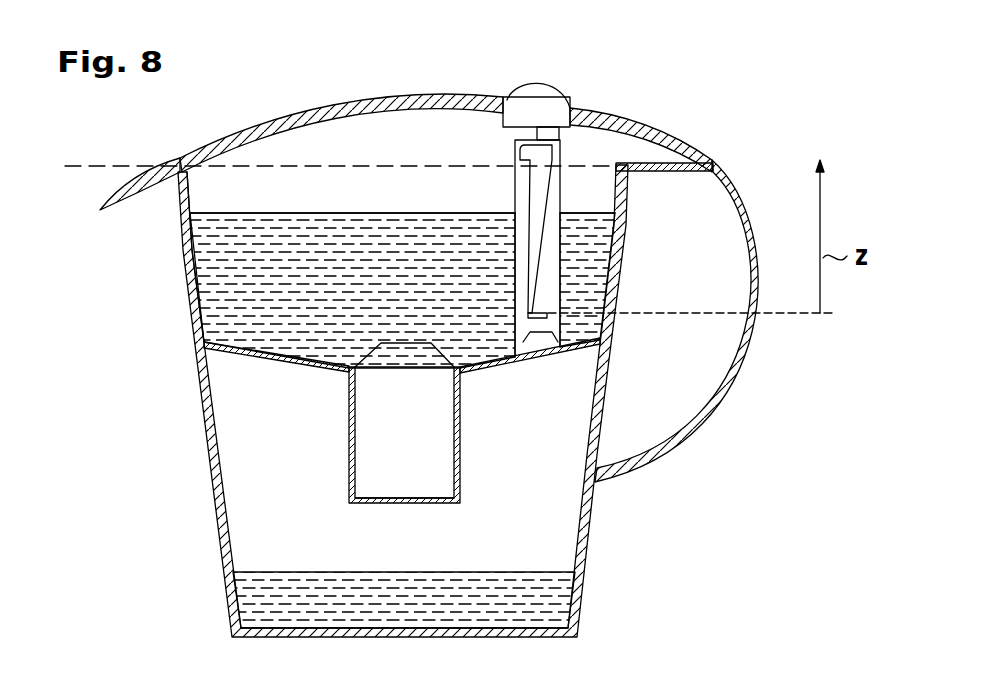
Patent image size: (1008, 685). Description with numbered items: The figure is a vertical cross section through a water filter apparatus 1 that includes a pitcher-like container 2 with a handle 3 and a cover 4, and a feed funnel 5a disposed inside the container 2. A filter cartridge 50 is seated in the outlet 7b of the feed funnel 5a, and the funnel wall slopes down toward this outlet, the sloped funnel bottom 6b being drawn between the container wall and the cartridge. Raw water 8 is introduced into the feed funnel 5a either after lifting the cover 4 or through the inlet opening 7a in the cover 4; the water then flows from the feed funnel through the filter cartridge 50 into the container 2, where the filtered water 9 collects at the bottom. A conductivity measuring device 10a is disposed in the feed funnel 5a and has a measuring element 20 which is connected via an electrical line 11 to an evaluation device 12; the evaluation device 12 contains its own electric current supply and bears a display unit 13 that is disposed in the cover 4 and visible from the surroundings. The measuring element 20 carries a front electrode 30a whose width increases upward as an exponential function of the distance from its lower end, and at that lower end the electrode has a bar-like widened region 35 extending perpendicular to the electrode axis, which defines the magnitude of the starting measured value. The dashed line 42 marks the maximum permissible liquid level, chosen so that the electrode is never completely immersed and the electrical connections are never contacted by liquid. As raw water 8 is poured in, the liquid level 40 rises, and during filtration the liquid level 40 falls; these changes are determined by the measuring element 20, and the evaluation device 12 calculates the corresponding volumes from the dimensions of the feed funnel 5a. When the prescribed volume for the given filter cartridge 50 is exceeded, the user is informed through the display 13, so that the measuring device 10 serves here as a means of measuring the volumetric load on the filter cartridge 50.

The water filter apparatus 1 is at (743, 120).
The pitcher-like container 2 is at (222, 532).
The handle 3 is at (703, 420).
The cover 4 is at (437, 100).
The feed funnel 5a is at (200, 272).
The funnel bottom 6b is at (274, 358).
The inlet opening 7a is at (264, 126).
The outlet of the feed funnel 7b is at (407, 503).
The raw water 8 is at (247, 308).
The filtered water 9 is at (253, 593).
The measuring device 10 is at (424, 118).
The conductivity measuring device 10a is at (641, 140).
The electrical line 11 is at (603, 117).
The evaluation device 12 is at (513, 107).
The display unit 13 is at (557, 96).
The measuring element 20 is at (555, 268).
The front electrode 30a is at (535, 212).
The bar-like widened region 35 is at (548, 320).
The liquid level 40 is at (327, 213).
The dashed line 42 is at (120, 167).
The filter cartridge 50 is at (437, 450).